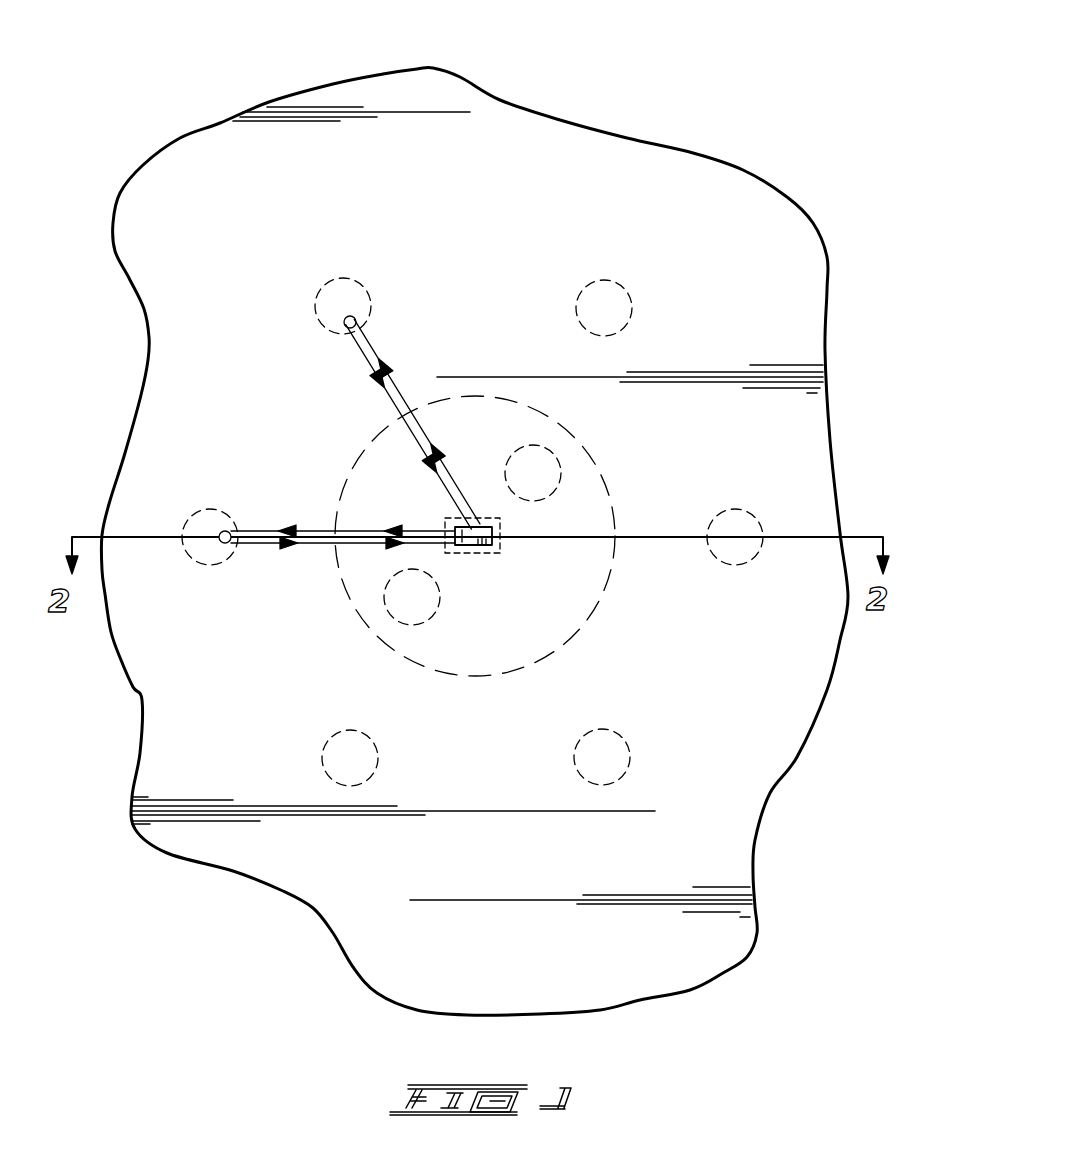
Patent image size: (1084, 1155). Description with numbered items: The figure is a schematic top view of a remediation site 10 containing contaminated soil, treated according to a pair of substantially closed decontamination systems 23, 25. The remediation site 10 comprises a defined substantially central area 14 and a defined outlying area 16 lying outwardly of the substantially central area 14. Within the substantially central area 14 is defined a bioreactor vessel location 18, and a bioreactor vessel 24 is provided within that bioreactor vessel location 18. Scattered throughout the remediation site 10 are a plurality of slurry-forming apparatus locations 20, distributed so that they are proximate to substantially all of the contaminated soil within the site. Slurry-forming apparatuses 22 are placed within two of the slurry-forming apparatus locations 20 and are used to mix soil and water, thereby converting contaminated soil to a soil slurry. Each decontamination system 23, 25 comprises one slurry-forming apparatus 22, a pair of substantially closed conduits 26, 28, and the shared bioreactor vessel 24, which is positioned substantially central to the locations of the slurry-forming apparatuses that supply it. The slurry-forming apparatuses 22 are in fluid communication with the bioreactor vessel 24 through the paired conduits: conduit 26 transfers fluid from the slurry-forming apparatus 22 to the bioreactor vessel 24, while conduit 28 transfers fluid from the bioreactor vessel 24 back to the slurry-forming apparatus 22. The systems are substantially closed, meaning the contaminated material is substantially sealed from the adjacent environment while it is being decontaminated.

The remediation site 10 is at (715, 115).
The substantially central area 14 is at (489, 675).
The outlying area 16 is at (678, 947).
The bioreactor vessel location 18 is at (484, 556).
The slurry-forming apparatus locations 20 is at (363, 287).
The slurry-forming apparatus 22 is at (344, 318).
The decontamination system 23 is at (309, 513).
The bioreactor vessel 24 is at (487, 522).
The decontamination system 25 is at (313, 367).
The conduit 26 is at (362, 372).
The conduit 28 is at (265, 528).